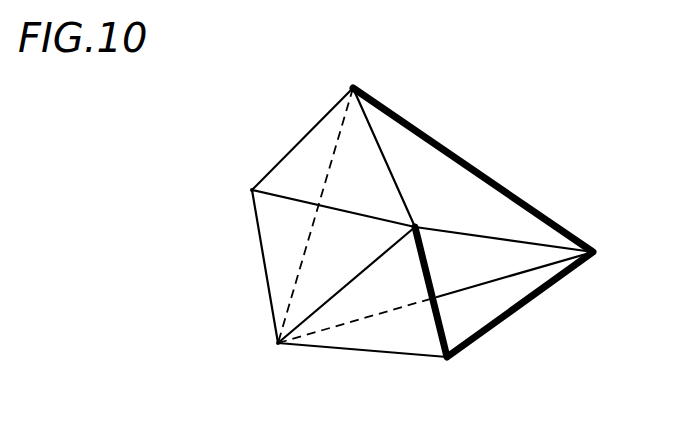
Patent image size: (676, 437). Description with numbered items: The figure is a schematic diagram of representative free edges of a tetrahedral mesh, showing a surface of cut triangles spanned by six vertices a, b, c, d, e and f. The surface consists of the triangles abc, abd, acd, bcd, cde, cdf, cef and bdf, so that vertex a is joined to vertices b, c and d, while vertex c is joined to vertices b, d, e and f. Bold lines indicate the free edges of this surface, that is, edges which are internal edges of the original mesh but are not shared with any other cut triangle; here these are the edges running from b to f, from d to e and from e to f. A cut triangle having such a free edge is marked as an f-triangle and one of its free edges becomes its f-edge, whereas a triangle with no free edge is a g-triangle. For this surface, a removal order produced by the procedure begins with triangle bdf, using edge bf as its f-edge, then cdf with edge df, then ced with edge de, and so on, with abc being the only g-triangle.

The vertex a is at (240, 190).
The vertex b is at (351, 75).
The vertex c is at (269, 355).
The vertex d is at (421, 215).
The vertex e is at (447, 371).
The vertex f is at (601, 256).